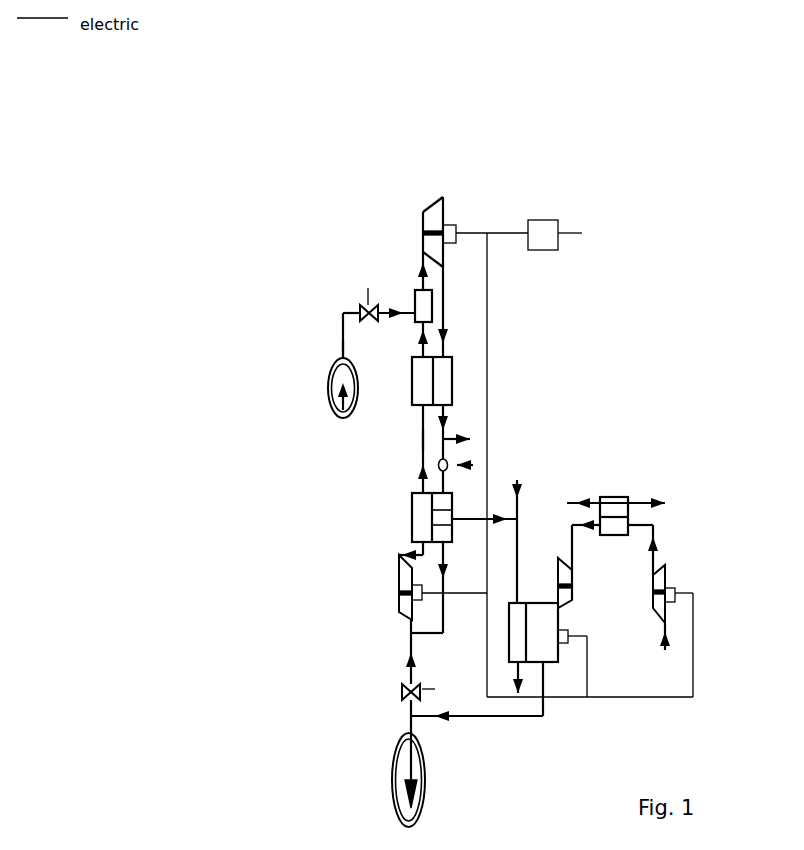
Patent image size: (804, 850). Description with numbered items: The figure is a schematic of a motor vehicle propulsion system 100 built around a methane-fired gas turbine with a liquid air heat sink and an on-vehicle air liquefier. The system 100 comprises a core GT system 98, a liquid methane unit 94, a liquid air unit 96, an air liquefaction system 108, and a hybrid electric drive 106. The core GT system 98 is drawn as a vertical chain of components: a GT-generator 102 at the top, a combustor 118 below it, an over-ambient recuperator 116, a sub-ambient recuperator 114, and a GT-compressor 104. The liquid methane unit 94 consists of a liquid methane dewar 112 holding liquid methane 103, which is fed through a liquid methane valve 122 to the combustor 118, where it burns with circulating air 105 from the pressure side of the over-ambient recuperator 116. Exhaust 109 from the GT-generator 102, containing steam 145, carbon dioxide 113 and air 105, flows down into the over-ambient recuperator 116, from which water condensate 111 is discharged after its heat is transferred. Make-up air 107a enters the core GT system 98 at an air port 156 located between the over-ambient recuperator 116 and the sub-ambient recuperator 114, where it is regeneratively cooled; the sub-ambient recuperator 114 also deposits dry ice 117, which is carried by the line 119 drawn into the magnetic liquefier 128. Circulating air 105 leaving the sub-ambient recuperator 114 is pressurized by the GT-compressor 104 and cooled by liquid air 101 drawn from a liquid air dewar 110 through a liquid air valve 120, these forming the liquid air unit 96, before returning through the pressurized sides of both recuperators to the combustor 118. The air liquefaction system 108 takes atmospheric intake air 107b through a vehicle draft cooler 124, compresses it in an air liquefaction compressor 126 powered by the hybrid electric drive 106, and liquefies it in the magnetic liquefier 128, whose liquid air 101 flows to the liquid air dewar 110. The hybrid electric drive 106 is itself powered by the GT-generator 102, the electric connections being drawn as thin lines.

The gas turbine engine system 100 is at (518, 183).
The turbine 102 is at (430, 222).
The controller 106 is at (546, 228).
The fuel line 145 is at (422, 268).
The heat exchanger 118 is at (415, 293).
The valve 122 is at (360, 307).
The water line 94 is at (347, 325).
The water supply line 103 is at (332, 363).
The water pump 112 is at (333, 403).
The fuel line 105 is at (420, 340).
The heat exchanger 116 is at (412, 395).
The exhaust line 109 is at (448, 342).
The fuel line 98 is at (432, 440).
The exhaust outlet line 111 is at (475, 439).
The mixer 156 is at (438, 462).
The air line 107a is at (473, 465).
The heat exchanger 114 is at (433, 522).
The outlet line 117 is at (510, 517).
The inlet line 119 is at (522, 483).
The compressor 104 is at (399, 583).
The fuel line 101 is at (408, 657).
The valve 120 is at (399, 690).
The return line 96 is at (423, 708).
The fuel pump 110 is at (425, 797).
The outlet line 113 is at (515, 683).
The heat exchanger 128 is at (560, 612).
The heat exchanger 124 is at (623, 512).
The compressor 108 is at (587, 583).
The compressor 126 is at (665, 572).
The air inlet line 107b is at (662, 640).